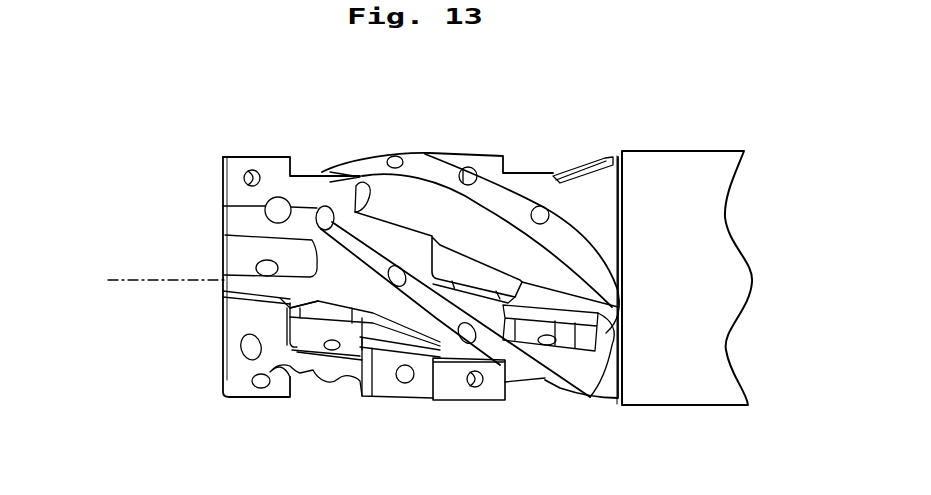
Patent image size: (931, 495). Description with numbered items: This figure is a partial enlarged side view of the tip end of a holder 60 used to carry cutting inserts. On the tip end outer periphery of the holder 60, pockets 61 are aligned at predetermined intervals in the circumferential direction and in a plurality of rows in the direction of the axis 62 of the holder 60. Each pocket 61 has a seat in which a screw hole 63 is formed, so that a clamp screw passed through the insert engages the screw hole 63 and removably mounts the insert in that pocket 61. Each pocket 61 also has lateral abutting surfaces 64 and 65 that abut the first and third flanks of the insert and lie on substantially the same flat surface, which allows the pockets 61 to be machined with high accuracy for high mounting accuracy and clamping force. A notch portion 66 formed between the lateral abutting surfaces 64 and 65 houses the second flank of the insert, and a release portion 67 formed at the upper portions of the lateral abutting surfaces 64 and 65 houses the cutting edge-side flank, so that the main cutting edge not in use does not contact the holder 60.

The holder 60 is at (656, 167).
The pockets 61 is at (328, 163).
The axis 62 is at (151, 280).
The screw hole 63 is at (333, 347).
The lateral abutting surface 64 is at (290, 352).
The lateral abutting surface 65 is at (367, 370).
The notch portion 66 is at (296, 372).
The release portion 67 is at (312, 302).